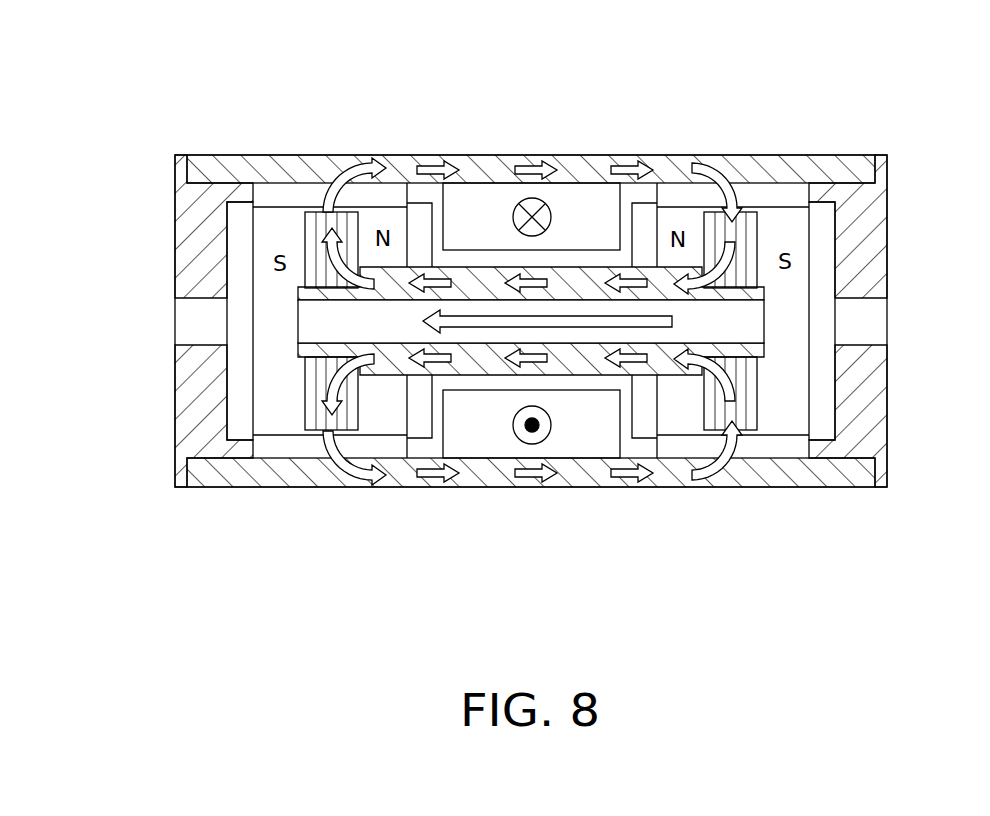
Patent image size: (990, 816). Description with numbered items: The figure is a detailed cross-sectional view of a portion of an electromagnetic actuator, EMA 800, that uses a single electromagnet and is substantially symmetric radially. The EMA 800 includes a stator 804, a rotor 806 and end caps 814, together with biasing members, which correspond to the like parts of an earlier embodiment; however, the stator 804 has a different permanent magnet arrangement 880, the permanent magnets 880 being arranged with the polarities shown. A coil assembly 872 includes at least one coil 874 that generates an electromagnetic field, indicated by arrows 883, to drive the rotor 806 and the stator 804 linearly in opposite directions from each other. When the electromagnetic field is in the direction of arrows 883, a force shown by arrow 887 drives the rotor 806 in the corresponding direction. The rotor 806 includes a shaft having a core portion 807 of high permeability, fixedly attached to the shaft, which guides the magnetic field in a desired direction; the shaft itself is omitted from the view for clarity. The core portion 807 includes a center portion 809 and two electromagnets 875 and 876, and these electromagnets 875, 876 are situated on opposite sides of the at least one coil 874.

The EMA 800 is at (48, 36).
The stator 804 is at (218, 155).
The rotor 806 is at (660, 287).
The core portion 807 is at (380, 375).
The center portion 809 is at (487, 363).
The end caps 814 is at (180, 205).
The coil assembly 872 is at (490, 144).
The coil 874 is at (568, 198).
The electromagnet 875 is at (322, 210).
The electromagnet 876 is at (740, 215).
The permanent magnets 880 is at (282, 420).
The arrows 883 is at (435, 155).
The arrow 887 is at (563, 322).